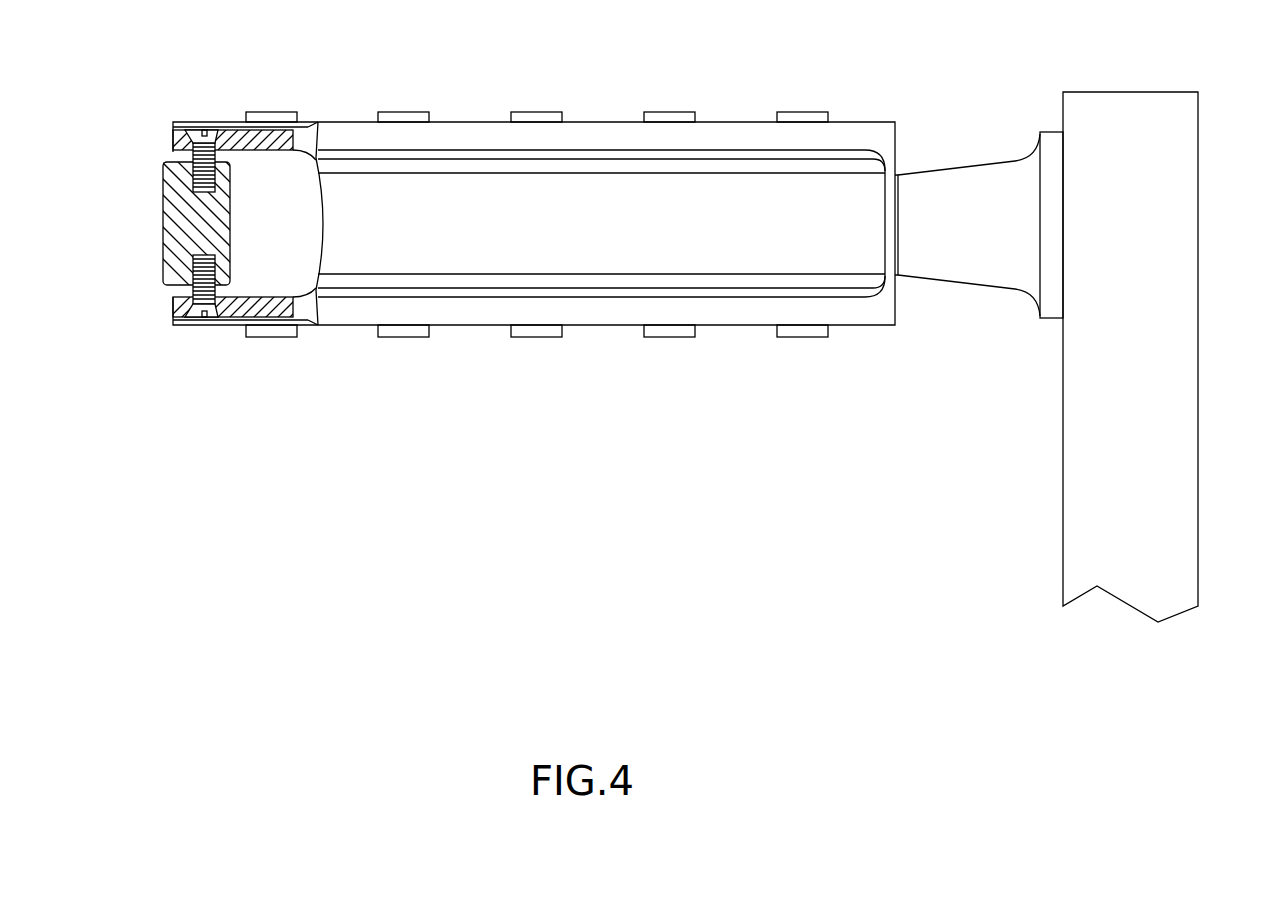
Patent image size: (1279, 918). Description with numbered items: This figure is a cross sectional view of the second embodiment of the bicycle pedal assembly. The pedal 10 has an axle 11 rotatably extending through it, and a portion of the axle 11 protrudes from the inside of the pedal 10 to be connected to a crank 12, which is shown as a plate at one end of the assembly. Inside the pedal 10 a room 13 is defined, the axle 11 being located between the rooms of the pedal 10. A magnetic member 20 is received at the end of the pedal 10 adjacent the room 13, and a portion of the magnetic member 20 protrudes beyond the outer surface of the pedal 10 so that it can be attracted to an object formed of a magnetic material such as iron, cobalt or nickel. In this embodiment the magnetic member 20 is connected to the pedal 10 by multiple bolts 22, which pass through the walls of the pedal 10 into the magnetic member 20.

The pedal 10 is at (593, 138).
The axle 11 is at (978, 183).
The crank 12 is at (1175, 285).
The room 13 is at (290, 208).
The magnetic member 20 is at (177, 212).
The bolt 22 is at (198, 137).